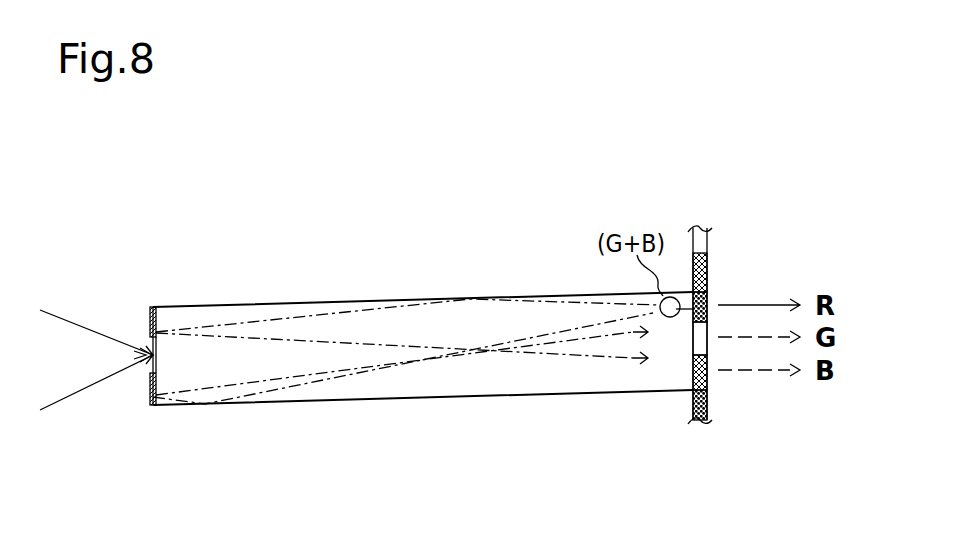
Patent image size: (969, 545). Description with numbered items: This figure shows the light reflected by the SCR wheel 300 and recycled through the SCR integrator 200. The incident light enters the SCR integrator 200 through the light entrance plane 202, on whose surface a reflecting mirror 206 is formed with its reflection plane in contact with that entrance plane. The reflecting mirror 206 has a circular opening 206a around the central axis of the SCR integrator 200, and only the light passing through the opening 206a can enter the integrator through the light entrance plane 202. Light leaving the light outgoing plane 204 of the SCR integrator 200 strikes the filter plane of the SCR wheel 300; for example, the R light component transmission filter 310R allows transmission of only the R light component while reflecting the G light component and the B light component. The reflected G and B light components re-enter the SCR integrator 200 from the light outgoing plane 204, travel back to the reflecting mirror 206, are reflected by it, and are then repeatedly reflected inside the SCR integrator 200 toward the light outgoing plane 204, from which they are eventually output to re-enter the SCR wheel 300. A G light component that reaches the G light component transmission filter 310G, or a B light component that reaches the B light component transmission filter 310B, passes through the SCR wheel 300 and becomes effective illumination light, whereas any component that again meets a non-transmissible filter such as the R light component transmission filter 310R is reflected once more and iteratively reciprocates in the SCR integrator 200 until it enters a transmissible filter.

The SCR integrator 200 is at (411, 298).
The light entrance plane 202 is at (122, 280).
The light outgoing plane 204 is at (723, 402).
The reflecting mirror 206 is at (150, 305).
The circular opening 206a is at (137, 338).
The SCR wheel 300 is at (699, 222).
The R light component transmission filter 310R is at (710, 297).
The G light component transmission filter 310G is at (712, 328).
The B light component transmission filter 310B is at (710, 375).